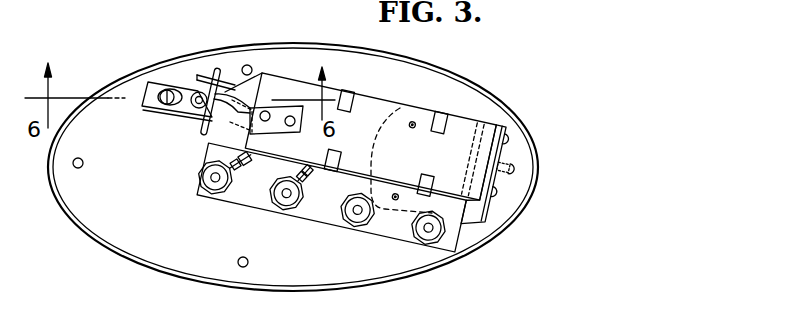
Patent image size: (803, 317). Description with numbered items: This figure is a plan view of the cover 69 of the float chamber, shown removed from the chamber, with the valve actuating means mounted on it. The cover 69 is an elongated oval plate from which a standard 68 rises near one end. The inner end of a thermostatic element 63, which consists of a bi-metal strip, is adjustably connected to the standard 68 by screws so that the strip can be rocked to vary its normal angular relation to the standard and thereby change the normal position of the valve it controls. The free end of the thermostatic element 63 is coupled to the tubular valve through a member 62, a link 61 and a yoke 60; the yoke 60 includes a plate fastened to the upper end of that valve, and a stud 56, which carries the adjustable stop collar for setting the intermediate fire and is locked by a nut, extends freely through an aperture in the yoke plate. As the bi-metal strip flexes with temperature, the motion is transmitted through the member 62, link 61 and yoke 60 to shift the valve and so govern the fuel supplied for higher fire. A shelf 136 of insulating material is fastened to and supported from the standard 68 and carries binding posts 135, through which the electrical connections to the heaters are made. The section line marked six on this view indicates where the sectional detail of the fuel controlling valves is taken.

The stud 56 is at (168, 107).
The yoke 60 is at (192, 108).
The link 61 is at (201, 150).
The member 62 is at (252, 108).
The thermostatic element 63 is at (367, 123).
The standard 68 is at (482, 222).
The cover 69 is at (157, 238).
The binding posts 135 is at (287, 194).
The shelf 136 is at (327, 212).